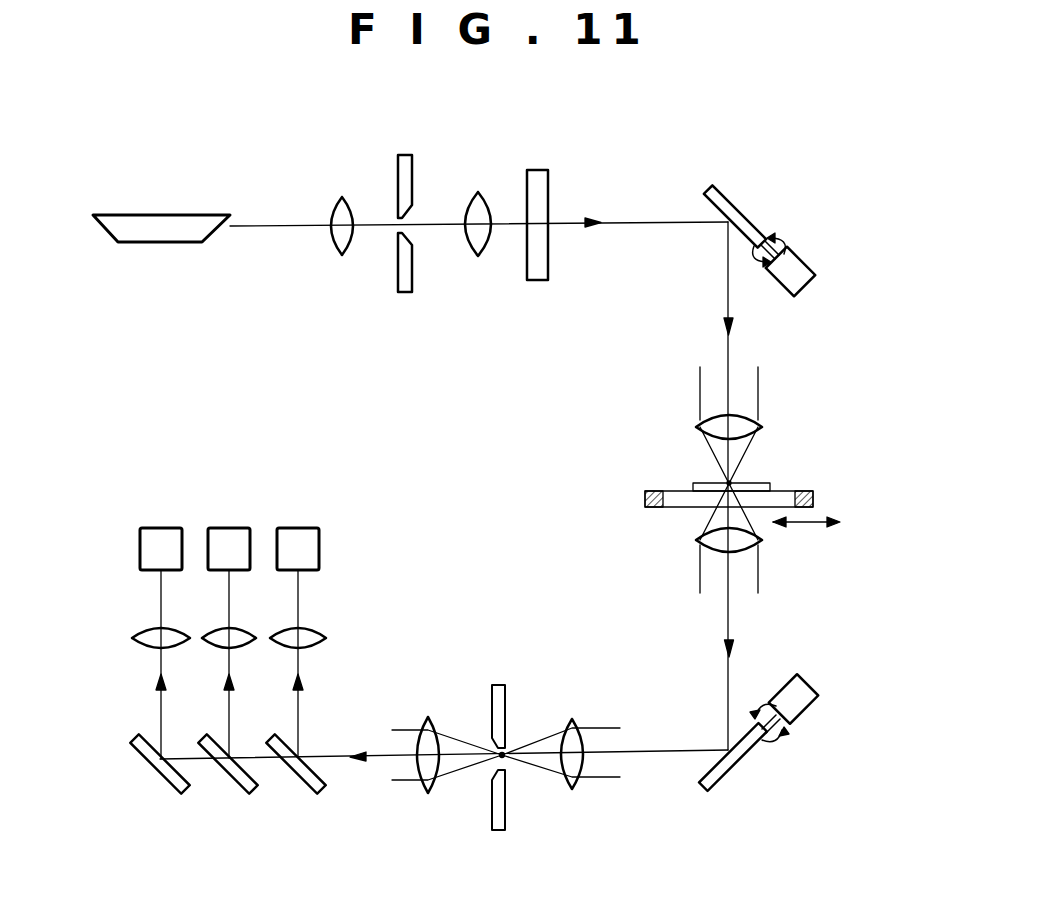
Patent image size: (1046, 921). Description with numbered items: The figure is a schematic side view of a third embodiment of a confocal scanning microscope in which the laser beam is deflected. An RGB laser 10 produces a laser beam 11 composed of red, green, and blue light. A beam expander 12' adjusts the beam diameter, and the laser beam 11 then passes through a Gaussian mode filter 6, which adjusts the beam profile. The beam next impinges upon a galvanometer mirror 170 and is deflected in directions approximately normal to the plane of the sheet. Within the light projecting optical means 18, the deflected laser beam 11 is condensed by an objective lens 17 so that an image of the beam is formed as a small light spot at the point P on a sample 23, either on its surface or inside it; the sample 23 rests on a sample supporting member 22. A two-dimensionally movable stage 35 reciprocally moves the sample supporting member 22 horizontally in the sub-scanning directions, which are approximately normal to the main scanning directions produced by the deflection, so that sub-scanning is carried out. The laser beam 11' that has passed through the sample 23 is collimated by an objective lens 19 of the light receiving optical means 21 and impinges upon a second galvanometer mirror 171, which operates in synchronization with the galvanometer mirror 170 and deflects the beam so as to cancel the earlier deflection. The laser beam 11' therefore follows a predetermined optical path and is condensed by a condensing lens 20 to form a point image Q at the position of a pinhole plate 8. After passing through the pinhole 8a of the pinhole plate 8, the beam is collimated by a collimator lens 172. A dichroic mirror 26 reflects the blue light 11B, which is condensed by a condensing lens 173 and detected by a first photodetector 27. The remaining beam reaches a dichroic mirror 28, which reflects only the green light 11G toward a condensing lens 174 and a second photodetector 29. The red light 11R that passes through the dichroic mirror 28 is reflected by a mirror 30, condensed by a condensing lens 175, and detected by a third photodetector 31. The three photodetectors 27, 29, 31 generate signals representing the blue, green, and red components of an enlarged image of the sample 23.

The RGB laser 10 is at (190, 212).
The laser beam 11 is at (479, 194).
The beam expander 12' is at (440, 204).
The Gaussian mode filter 6 is at (548, 172).
The galvanometer mirror 170 is at (748, 215).
The light projecting optical means 18 is at (578, 410).
The objective lens 17 is at (690, 424).
The sample 23 is at (697, 482).
The point P is at (735, 480).
The sample supporting member 22 is at (672, 502).
The two-dimensionally movable stage 35 is at (645, 501).
The light receiving optical means 21 is at (557, 505).
The objective lens 19 is at (697, 542).
The laser beam 11' is at (774, 486).
The galvanometer mirror 171 is at (722, 783).
The collimator lens 172 is at (428, 728).
The pinhole plate 8 is at (500, 685).
The pinhole 8a is at (497, 770).
The point image Q is at (505, 752).
The condensing lens 20 is at (575, 725).
The dichroic mirror 26 is at (320, 790).
The dichroic mirror 28 is at (252, 790).
The mirror 30 is at (185, 790).
The red light 11R is at (159, 710).
The green light 11G is at (231, 716).
The blue light 11B is at (300, 716).
The condensing lens 173 is at (314, 628).
The condensing lens 174 is at (223, 628).
The condensing lens 175 is at (156, 628).
The first photodetector 27 is at (303, 528).
The second photodetector 29 is at (238, 533).
The third photodetector 31 is at (166, 528).